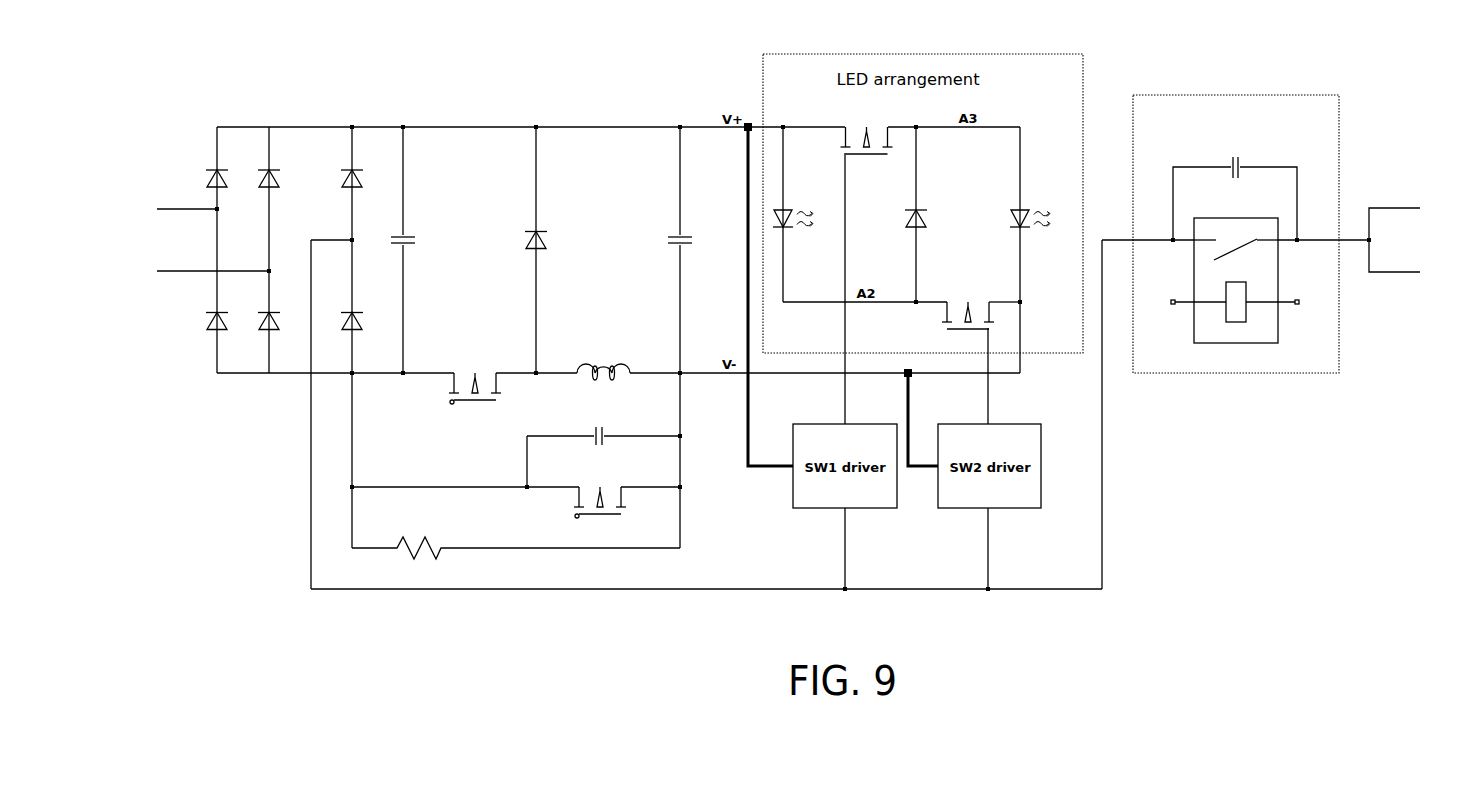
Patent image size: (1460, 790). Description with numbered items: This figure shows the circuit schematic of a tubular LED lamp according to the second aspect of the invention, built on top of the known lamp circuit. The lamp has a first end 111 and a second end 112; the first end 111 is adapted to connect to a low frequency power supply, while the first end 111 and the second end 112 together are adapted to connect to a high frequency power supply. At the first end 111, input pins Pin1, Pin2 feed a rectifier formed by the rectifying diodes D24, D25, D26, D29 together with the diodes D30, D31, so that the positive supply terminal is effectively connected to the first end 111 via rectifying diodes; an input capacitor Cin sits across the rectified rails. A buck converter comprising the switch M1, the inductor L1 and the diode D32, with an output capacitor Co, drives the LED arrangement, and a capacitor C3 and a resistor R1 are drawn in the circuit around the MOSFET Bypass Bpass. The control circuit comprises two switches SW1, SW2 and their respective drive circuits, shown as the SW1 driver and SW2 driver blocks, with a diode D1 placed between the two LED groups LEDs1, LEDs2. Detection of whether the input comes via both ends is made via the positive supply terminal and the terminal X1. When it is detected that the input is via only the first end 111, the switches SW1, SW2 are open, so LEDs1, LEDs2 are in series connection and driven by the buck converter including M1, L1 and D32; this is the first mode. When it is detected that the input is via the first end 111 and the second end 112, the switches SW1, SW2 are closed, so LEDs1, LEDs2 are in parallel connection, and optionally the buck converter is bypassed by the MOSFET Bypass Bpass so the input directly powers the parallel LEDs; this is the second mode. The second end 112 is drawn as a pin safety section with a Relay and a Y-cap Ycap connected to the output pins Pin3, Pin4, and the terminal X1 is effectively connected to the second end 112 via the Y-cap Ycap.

The first end 111 is at (124, 288).
The second end 112 is at (1400, 311).
The rectifying diode D24 is at (206, 168).
The rectifying diode D25 is at (206, 291).
The rectifying diode D26 is at (257, 199).
The rectifying diode D29 is at (257, 322).
The rectifying diode D30 is at (340, 183).
The rectifying diode D31 is at (340, 306).
The input pin 1 Pin1 is at (171, 209).
The input pin 2 Pin2 is at (197, 271).
The input capacitor Cin is at (411, 250).
The diode D32 is at (524, 250).
The output capacitor Co is at (687, 250).
The switch M1 is at (475, 377).
The inductor L1 is at (603, 365).
The capacitor C3 is at (603, 428).
The MOSFET Bypass Bpass is at (516, 490).
The resistor R1 is at (516, 541).
The terminal X1 is at (706, 581).
The switch SW1 is at (867, 262).
The switch SW2 is at (968, 349).
The diode D1 is at (922, 214).
The element LEDs1 is at (803, 214).
The element LEDs2 is at (1040, 250).
The Y-cap Ycap is at (1235, 191).
The relay Relay is at (1235, 269).
The output pin 3 Pin3 is at (1411, 220).
The output pin 4 Pin4 is at (1411, 260).